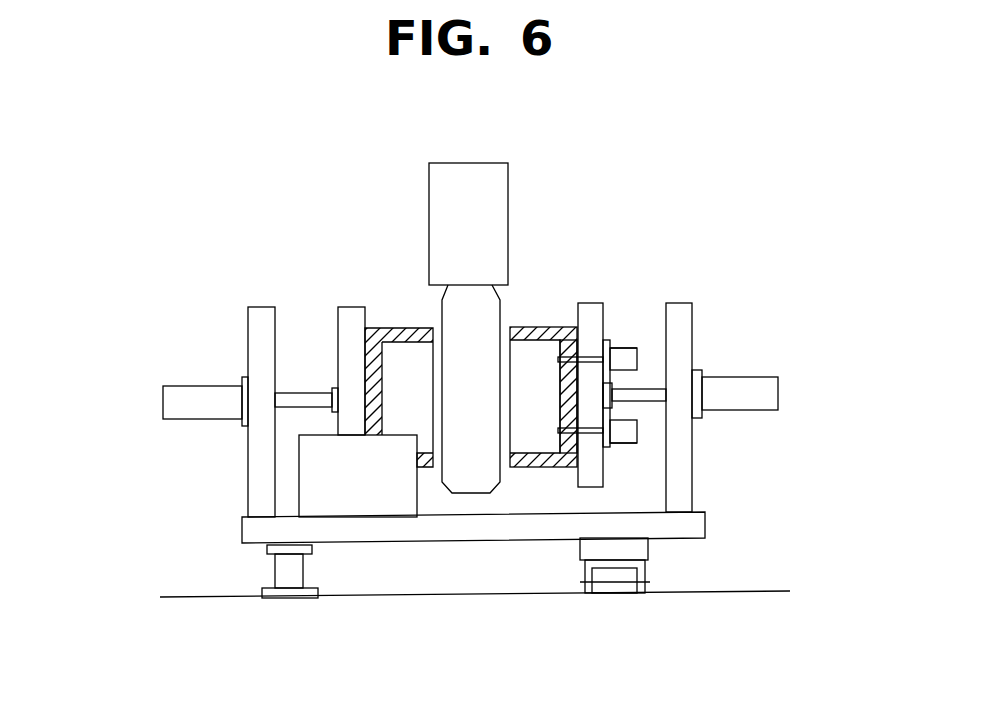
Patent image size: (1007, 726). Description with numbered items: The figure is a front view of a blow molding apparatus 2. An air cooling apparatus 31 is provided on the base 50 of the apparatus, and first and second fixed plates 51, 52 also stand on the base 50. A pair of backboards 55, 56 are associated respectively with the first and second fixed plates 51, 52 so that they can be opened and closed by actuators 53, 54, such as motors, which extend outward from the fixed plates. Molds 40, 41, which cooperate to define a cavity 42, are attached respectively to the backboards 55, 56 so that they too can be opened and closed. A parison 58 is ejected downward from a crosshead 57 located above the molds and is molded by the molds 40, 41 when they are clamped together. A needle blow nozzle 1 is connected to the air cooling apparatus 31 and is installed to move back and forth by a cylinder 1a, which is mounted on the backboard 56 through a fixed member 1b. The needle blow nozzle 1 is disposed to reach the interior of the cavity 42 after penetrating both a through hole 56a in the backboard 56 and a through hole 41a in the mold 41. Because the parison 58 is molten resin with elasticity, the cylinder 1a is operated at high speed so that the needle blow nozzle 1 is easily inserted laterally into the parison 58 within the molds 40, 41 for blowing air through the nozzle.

The needle blow nozzle 1 is at (606, 340).
The cylinder 1a is at (614, 349).
The fixed member 1b is at (617, 348).
The blow molding apparatus 2 is at (613, 234).
The air cooling apparatus 31 is at (393, 502).
The mold 40 is at (388, 330).
The mold 41 is at (540, 327).
The through hole 41a is at (558, 357).
The cavity 42 is at (566, 348).
The base 50 is at (703, 519).
The first fixed plate 51 is at (258, 310).
The second fixed plate 52 is at (680, 303).
The actuator 53 is at (190, 392).
The actuator 54 is at (760, 385).
The backboard 55 is at (348, 310).
The backboard 56 is at (592, 303).
The through hole 56a is at (612, 385).
The crosshead 57 is at (492, 170).
The parison 58 is at (485, 490).